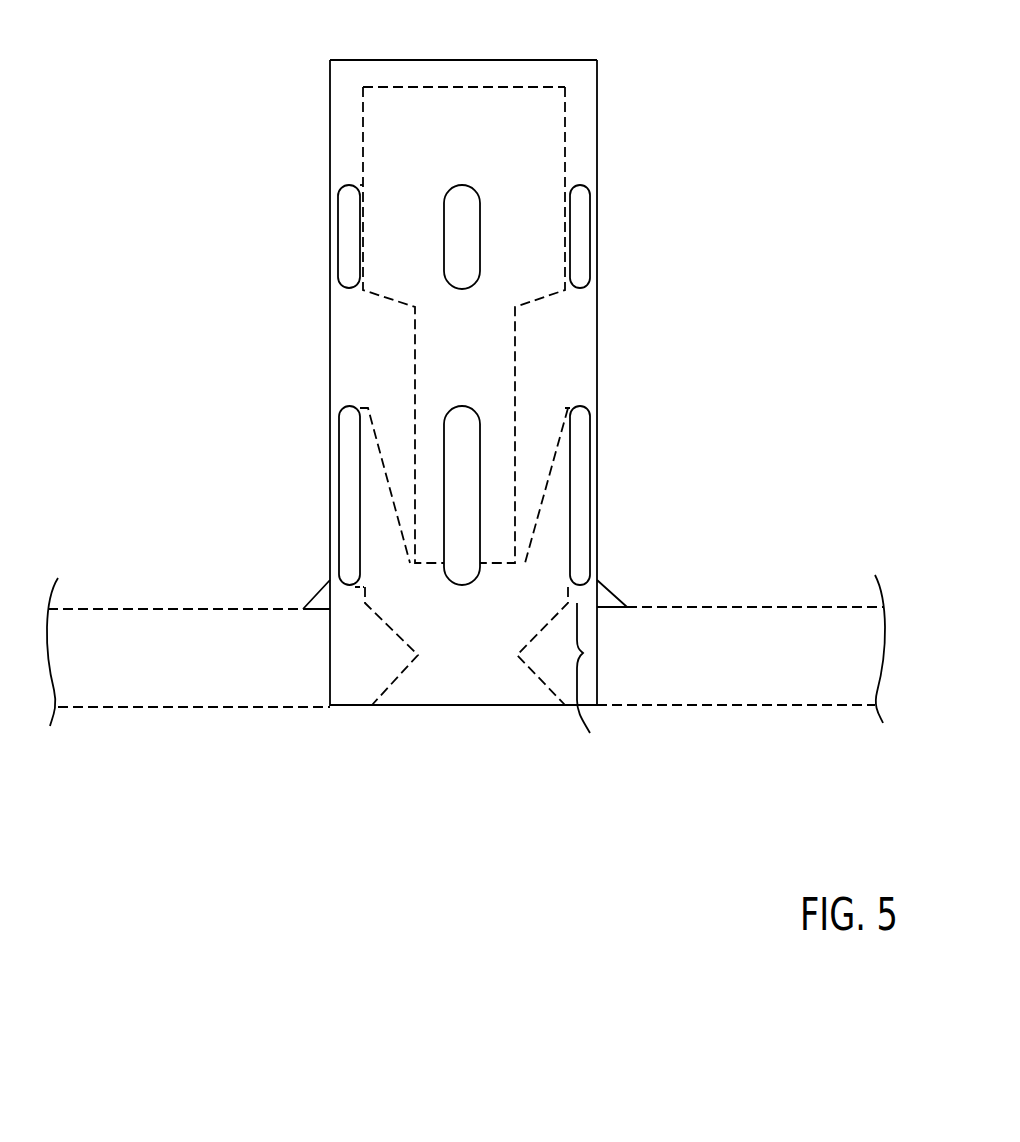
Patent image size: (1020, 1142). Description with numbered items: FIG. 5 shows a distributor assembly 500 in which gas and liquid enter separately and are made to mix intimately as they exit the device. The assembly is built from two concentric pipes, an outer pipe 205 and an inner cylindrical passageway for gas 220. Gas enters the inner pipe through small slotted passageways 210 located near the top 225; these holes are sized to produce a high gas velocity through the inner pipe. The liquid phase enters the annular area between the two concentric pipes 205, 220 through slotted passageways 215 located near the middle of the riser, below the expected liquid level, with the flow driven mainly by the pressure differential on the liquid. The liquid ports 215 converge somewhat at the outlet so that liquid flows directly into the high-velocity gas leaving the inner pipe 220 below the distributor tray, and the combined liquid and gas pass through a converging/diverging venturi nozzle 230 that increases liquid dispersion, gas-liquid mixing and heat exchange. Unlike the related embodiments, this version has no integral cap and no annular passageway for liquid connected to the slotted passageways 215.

The connector assembly 500 is at (138, 236).
The outer pipe 205 is at (600, 305).
The slotted passageway for gas 210 is at (348, 208).
The slotted passageway for liquid 215 is at (350, 460).
The cylindrical passageway for gas 220 is at (515, 364).
The top 225 is at (489, 58).
The venturi nozzle 230 is at (604, 677).